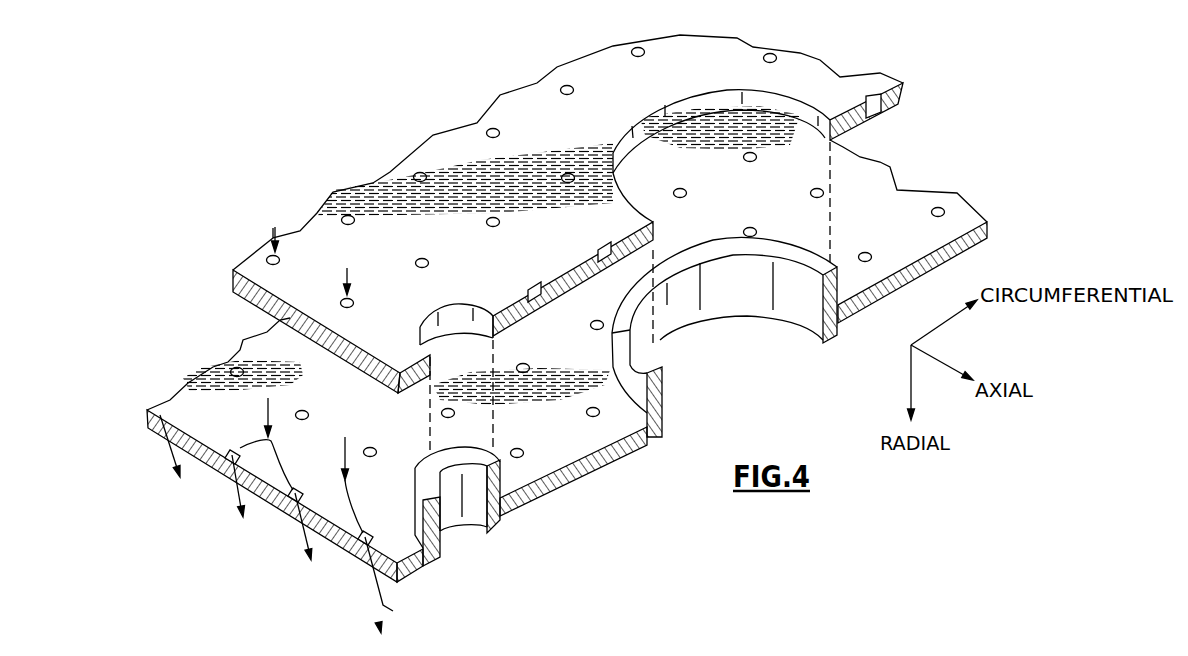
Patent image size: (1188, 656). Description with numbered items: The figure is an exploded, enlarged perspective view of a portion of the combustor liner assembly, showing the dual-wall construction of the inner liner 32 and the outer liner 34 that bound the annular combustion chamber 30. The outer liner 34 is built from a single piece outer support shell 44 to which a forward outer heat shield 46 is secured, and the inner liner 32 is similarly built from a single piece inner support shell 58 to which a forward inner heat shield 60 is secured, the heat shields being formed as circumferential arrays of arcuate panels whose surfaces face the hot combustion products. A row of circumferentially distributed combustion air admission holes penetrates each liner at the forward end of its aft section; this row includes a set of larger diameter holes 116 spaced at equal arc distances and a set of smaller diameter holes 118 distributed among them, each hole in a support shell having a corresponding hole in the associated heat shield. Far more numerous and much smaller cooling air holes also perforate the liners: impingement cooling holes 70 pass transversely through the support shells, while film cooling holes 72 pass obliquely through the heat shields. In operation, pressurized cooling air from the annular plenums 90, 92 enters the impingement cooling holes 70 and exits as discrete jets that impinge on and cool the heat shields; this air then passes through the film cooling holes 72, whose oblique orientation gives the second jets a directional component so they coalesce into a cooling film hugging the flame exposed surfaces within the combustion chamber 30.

The annular combustion chamber 30 is at (670, 496).
The radially inner liner 32 is at (206, 260).
The radially outer liner 34 is at (255, 306).
The outer support shell 44 is at (460, 173).
The inner support shell 58 is at (386, 190).
The forward outer heat shield 46 is at (376, 353).
The forward inner heat shield 60 is at (247, 350).
The impingement cooling holes 70 is at (343, 297).
The film cooling holes 72 is at (240, 448).
The annular plenum 90 is at (480, 72).
The annular plenum 92 is at (568, 214).
The larger diameter combustion air holes 116 is at (690, 107).
The smaller diameter combustion air holes 118 is at (465, 313).